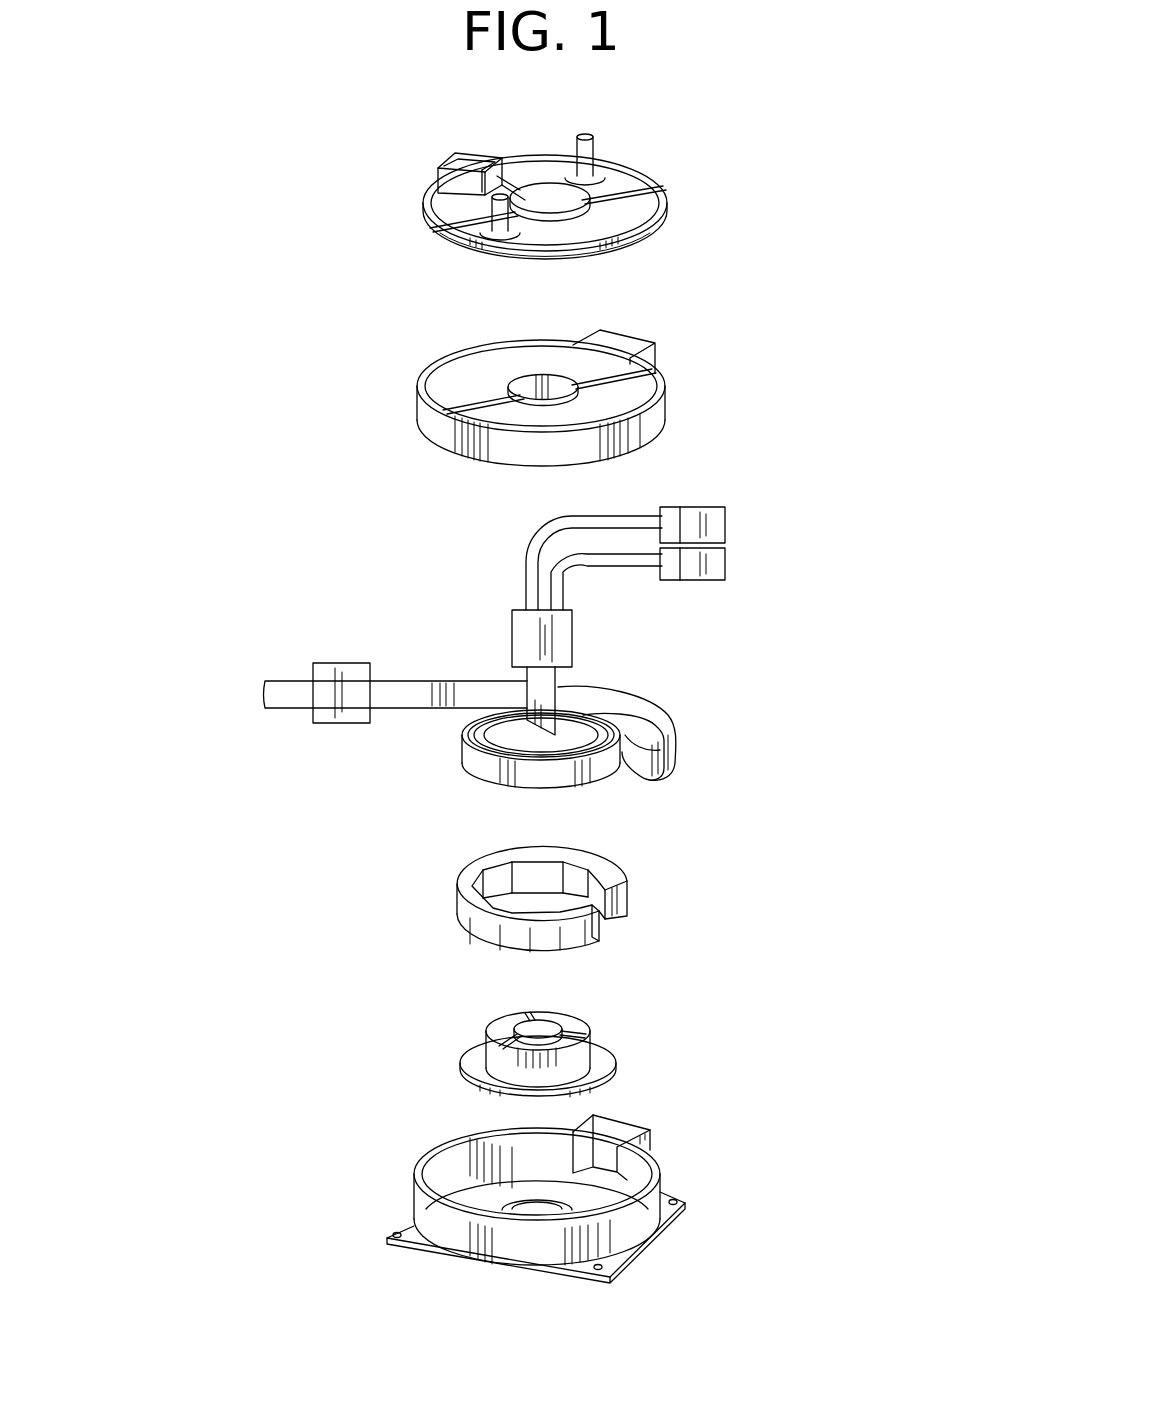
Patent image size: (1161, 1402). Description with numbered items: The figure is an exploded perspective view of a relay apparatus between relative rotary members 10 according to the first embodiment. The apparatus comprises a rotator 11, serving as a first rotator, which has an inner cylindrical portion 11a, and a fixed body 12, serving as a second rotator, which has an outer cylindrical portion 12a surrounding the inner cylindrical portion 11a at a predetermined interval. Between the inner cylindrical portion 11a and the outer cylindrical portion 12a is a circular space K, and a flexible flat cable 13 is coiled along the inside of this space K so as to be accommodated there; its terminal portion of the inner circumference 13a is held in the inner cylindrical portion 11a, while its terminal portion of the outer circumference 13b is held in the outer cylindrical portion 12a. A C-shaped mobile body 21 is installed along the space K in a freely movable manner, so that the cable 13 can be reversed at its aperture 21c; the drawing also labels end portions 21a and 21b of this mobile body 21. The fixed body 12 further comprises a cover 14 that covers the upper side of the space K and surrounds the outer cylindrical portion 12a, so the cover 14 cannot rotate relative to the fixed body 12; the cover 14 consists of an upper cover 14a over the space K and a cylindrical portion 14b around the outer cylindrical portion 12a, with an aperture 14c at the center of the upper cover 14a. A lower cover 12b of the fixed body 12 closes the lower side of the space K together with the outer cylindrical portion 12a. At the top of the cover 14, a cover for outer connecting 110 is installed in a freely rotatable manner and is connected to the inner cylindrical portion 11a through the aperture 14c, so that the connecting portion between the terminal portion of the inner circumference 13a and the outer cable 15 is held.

The relay apparatus between relative rotary members 10 is at (781, 282).
The cover for outer connecting 110 is at (637, 190).
The cover 14 is at (673, 408).
The upper cover 14a is at (650, 380).
The cylindrical portion 14b is at (645, 435).
The aperture 14c is at (538, 374).
The outer cable 15 is at (530, 544).
The cable (flexible flat cable) 13 is at (684, 740).
The terminal portion of the inner circumference 13a is at (548, 698).
The terminal portion of the outer circumference 13b is at (428, 682).
The C-shaped mobile body 21 is at (598, 848).
The ring end portion 21a is at (624, 900).
The ring lower end portion 21b is at (603, 935).
The aperture 21c is at (606, 928).
The rotator (first rotator) 11 is at (624, 1050).
The inner cylindrical portion 11a is at (588, 1021).
The fixed body (second rotator) 12 is at (408, 1193).
The outer cylindrical portion 12a is at (417, 1168).
The lower cover 12b is at (488, 1198).
The circular space K is at (457, 1163).